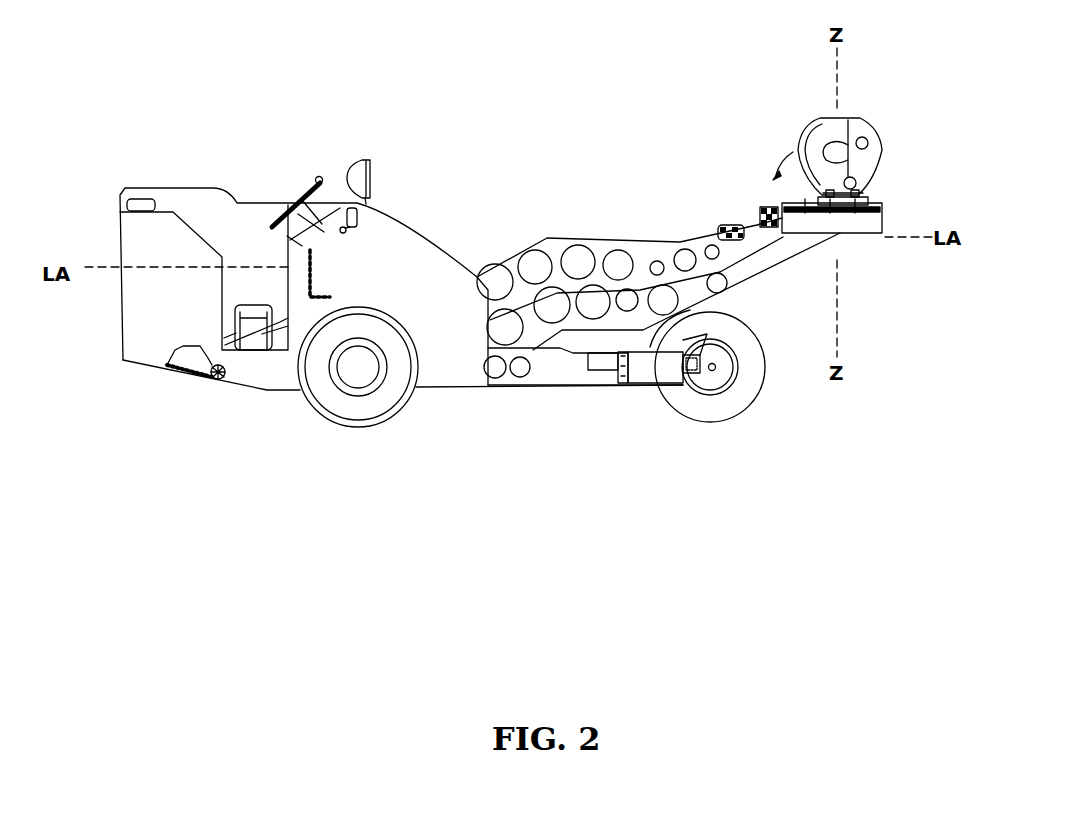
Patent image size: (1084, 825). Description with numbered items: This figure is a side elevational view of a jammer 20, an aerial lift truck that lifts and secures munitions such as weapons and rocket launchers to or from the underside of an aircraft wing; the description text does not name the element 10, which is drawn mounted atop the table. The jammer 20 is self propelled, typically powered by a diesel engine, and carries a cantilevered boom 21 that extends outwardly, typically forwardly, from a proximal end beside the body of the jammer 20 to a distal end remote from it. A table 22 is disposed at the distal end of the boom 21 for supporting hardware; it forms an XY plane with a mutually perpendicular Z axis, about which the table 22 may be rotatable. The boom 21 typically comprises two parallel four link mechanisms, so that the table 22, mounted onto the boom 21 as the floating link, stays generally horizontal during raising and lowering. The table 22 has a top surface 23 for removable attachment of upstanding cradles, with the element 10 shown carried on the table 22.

The jammer 20 is at (229, 108).
The boom 21 is at (598, 250).
The table 22 is at (884, 201).
The top surface 23 is at (870, 205).
The tool head 10 is at (852, 128).